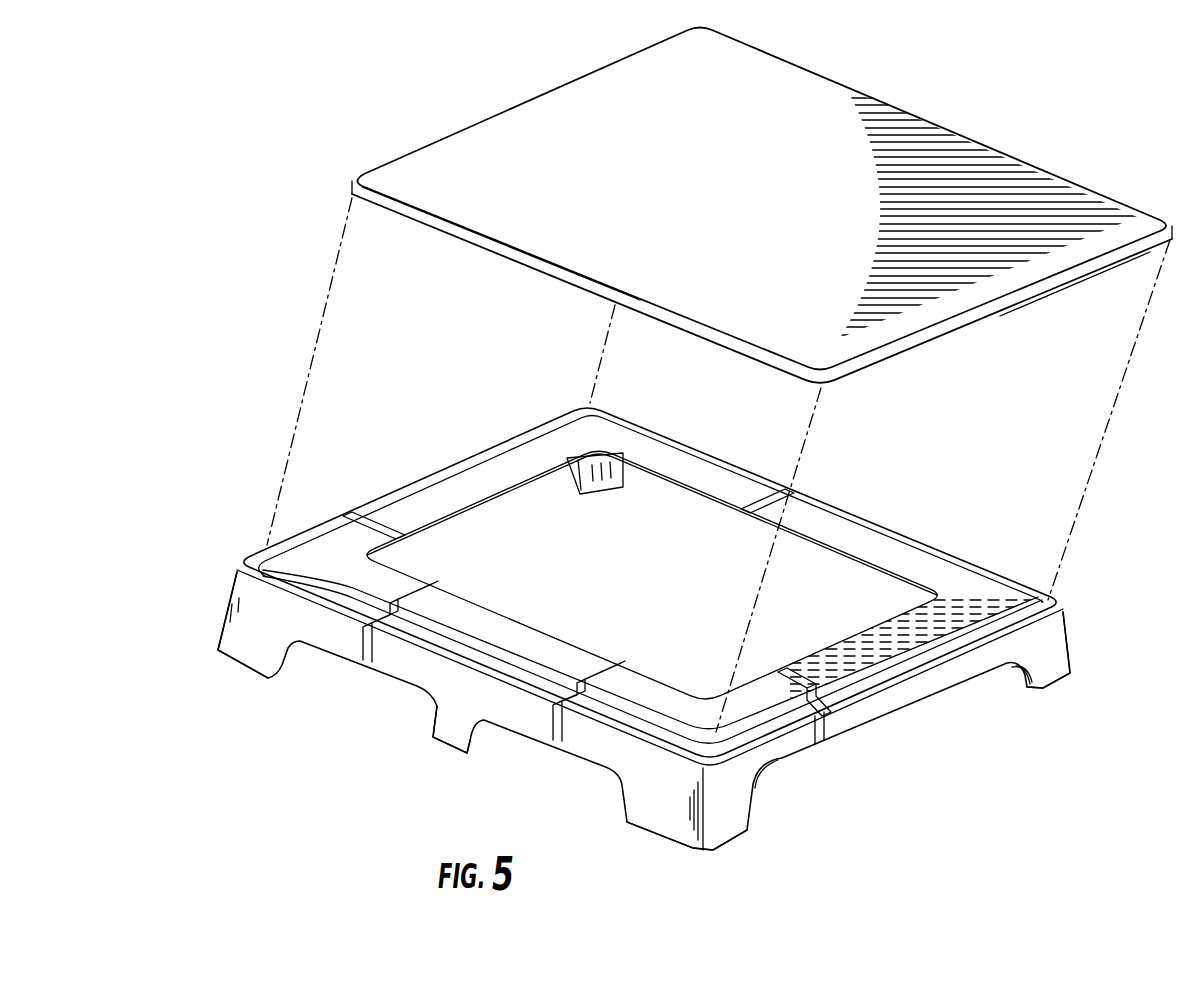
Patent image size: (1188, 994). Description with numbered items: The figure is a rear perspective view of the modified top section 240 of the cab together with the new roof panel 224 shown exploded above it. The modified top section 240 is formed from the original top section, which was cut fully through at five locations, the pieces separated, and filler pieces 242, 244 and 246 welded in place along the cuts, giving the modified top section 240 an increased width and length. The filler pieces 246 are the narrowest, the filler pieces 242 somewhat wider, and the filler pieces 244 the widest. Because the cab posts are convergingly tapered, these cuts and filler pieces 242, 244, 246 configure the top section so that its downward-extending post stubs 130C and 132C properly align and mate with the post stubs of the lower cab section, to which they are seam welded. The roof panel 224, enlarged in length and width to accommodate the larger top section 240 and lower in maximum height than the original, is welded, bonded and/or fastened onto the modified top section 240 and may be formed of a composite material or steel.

The roof panel 224 is at (918, 150).
The modified top section 240 is at (905, 735).
The filler piece 242 is at (762, 495).
The filler piece 244 is at (387, 513).
The filler piece 246 is at (405, 590).
The post stub 130C is at (590, 493).
The post stub 132C is at (222, 618).